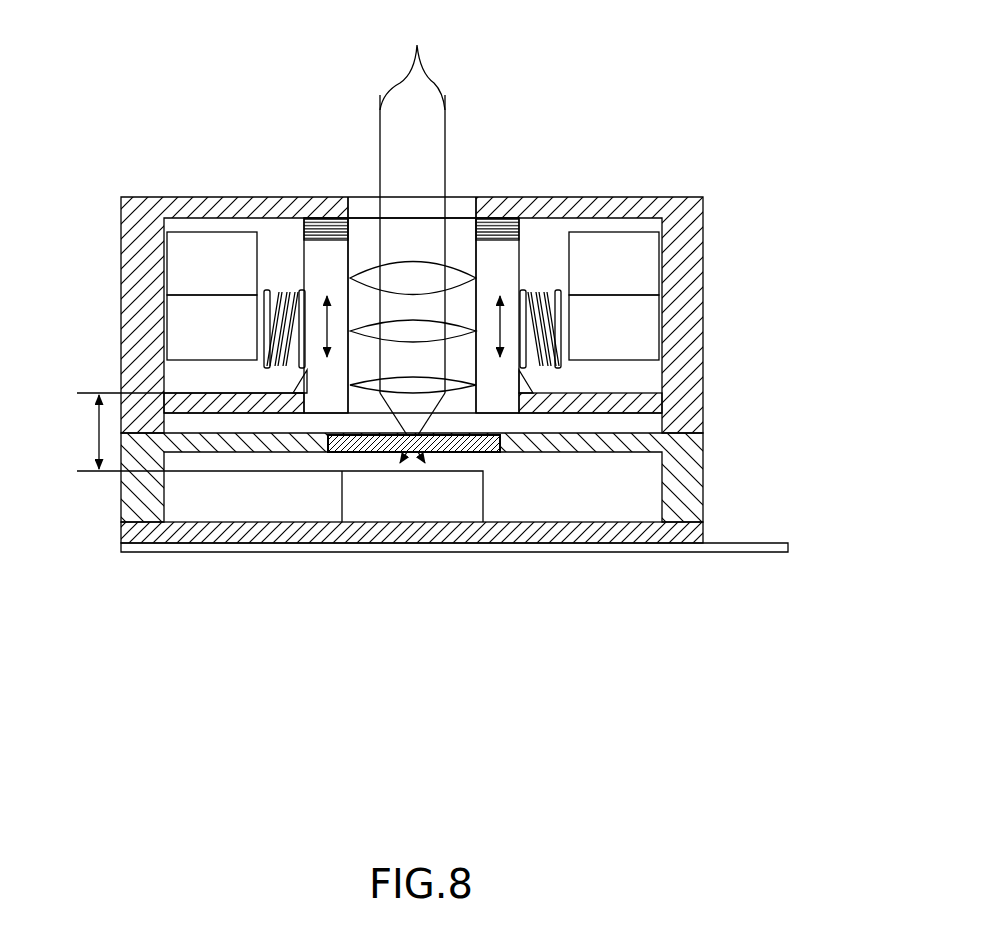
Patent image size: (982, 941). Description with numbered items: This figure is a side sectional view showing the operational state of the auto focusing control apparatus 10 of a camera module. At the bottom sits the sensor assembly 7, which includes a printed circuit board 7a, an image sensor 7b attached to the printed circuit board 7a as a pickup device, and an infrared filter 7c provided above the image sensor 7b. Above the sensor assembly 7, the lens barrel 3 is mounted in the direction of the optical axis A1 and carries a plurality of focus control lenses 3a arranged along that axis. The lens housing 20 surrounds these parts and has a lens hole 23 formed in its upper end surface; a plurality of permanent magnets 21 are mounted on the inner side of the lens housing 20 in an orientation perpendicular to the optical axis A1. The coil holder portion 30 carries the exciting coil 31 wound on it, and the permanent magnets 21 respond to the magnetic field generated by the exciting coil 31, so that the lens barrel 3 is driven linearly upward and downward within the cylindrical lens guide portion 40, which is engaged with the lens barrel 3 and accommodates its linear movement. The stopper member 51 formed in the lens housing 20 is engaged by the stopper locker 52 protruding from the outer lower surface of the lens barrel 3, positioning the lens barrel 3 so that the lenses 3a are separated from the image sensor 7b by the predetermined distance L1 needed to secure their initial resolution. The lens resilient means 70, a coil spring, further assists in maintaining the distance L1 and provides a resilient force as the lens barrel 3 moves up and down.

The auto focusing control apparatus 10 is at (430, 335).
The lens housing 20 is at (672, 190).
The permanent magnets 21 is at (640, 258).
The lens hole 23 is at (355, 208).
The coil holder portion 30 is at (526, 292).
The exciting coil 31 is at (556, 303).
The lens guide portion 40 is at (286, 206).
The lens resilient means 70 is at (502, 222).
The lens barrel 3 is at (504, 405).
The focus control lenses 3a is at (453, 277).
The stopper member 51 is at (508, 402).
The stopper locker 52 is at (528, 385).
The sensor assembly 7 is at (454, 543).
The printed circuit board 7a is at (358, 610).
The image sensor 7b is at (416, 503).
The infrared filter 7c is at (372, 448).
The optical axis A1 is at (412, 241).
The predetermined distance L1 is at (188, 432).